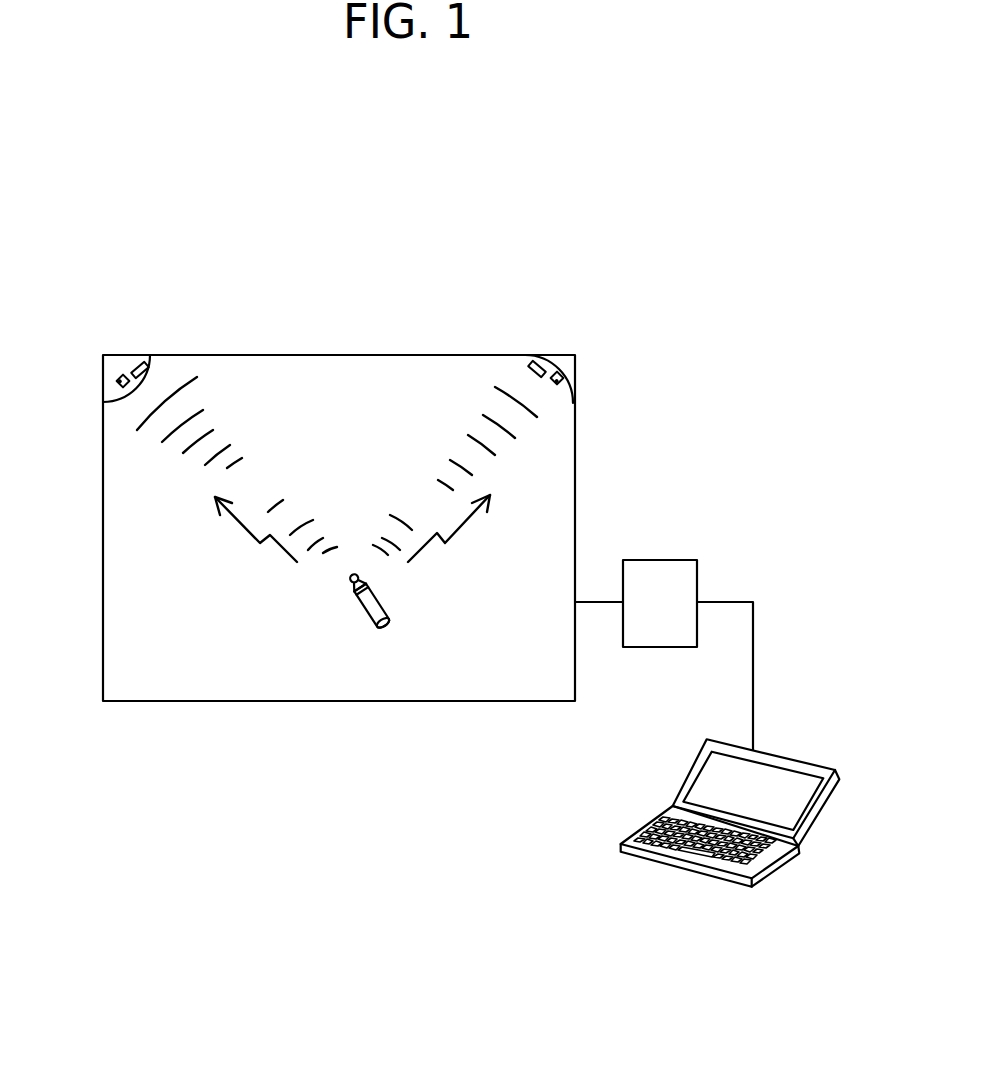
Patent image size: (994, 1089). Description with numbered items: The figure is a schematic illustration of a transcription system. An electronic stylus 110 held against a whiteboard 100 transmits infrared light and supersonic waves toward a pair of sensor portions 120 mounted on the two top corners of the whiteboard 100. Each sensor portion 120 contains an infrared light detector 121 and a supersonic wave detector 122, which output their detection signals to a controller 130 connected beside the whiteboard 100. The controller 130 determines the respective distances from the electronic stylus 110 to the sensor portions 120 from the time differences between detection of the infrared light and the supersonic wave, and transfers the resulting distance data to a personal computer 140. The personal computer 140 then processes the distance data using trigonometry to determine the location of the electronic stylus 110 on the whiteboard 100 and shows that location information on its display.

The whiteboard 100 is at (195, 701).
The electronic stylus 110 is at (364, 612).
The sensor portion 120 is at (121, 360).
The infrared light detector 121 is at (155, 358).
The supersonic wave detector 122 is at (103, 367).
The controller 130 is at (665, 560).
The personal computer 140 is at (672, 870).